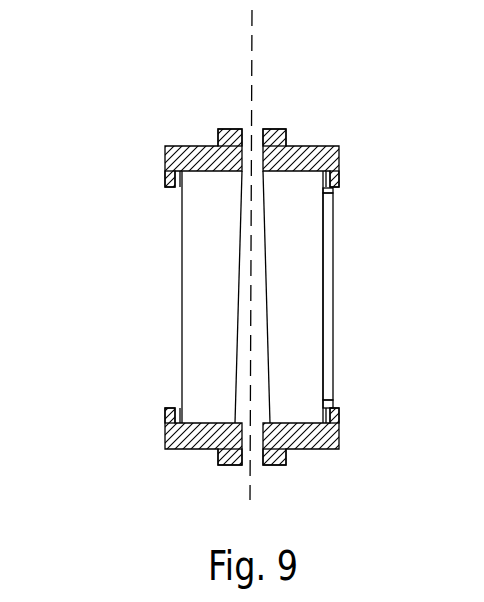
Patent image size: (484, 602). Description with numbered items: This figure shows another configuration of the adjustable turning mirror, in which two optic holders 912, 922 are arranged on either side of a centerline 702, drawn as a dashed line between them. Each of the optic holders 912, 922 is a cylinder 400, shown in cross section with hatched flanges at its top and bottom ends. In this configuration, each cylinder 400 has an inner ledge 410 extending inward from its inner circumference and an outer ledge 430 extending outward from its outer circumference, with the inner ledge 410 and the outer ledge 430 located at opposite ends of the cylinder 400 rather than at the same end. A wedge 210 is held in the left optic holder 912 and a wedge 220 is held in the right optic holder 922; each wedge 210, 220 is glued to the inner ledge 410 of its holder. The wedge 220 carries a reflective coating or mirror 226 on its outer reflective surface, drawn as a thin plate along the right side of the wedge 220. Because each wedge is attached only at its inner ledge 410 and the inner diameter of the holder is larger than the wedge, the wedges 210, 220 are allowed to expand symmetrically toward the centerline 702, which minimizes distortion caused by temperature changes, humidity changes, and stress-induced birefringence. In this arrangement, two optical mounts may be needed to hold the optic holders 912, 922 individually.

The centerline 702 is at (252, 57).
The optic holder 912 is at (128, 87).
The optic holder 922 is at (368, 87).
The wedge 210 is at (225, 305).
The wedge 220 is at (310, 305).
The reflective coating or mirror 226 is at (333, 340).
The cylinder 400 is at (200, 146).
The inner ledge 410 is at (170, 188).
The outer ledge 430 is at (228, 129).